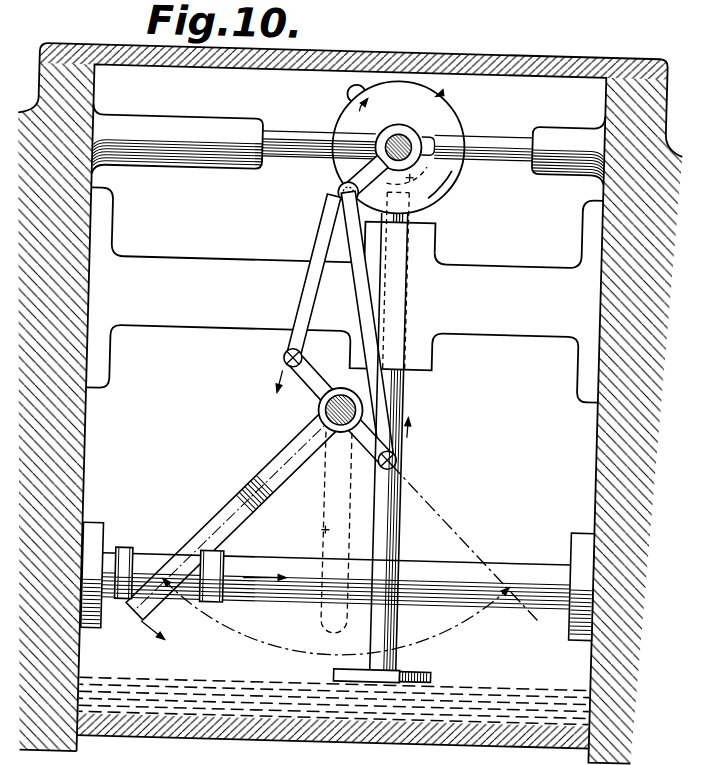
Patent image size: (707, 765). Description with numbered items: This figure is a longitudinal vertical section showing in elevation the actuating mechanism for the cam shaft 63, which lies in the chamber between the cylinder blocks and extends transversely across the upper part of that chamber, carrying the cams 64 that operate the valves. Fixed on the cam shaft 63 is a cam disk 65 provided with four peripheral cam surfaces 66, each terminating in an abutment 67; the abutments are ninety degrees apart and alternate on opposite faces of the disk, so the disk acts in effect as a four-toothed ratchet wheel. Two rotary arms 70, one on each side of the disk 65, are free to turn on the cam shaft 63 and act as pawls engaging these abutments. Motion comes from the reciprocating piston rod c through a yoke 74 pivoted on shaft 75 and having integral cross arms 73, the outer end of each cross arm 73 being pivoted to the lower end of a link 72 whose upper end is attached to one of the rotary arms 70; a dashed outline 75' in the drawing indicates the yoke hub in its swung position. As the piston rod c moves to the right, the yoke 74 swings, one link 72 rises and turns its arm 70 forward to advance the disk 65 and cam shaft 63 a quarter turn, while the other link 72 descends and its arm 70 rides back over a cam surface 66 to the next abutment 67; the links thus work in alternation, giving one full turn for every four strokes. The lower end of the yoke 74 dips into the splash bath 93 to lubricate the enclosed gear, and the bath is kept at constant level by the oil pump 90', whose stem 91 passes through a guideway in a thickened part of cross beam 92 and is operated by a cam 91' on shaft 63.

The cam shaft 63 is at (402, 125).
The cam 64 is at (451, 162).
The cam disk 65 is at (444, 183).
The cam surface 66 is at (441, 84).
The abutment 67 is at (448, 94).
The rotary arm 70 is at (352, 88).
The link 72 is at (368, 275).
The cross arm 73 is at (311, 349).
The yoke 74 is at (276, 470).
The shaft 75 is at (335, 409).
The hub alternate position 75' is at (312, 531).
The stem 91 is at (416, 442).
The cam 91' is at (427, 179).
The cross beam 92 is at (431, 353).
The splash bath 93 is at (497, 686).
The oil pump 90' is at (392, 665).
The piston rod c is at (534, 557).